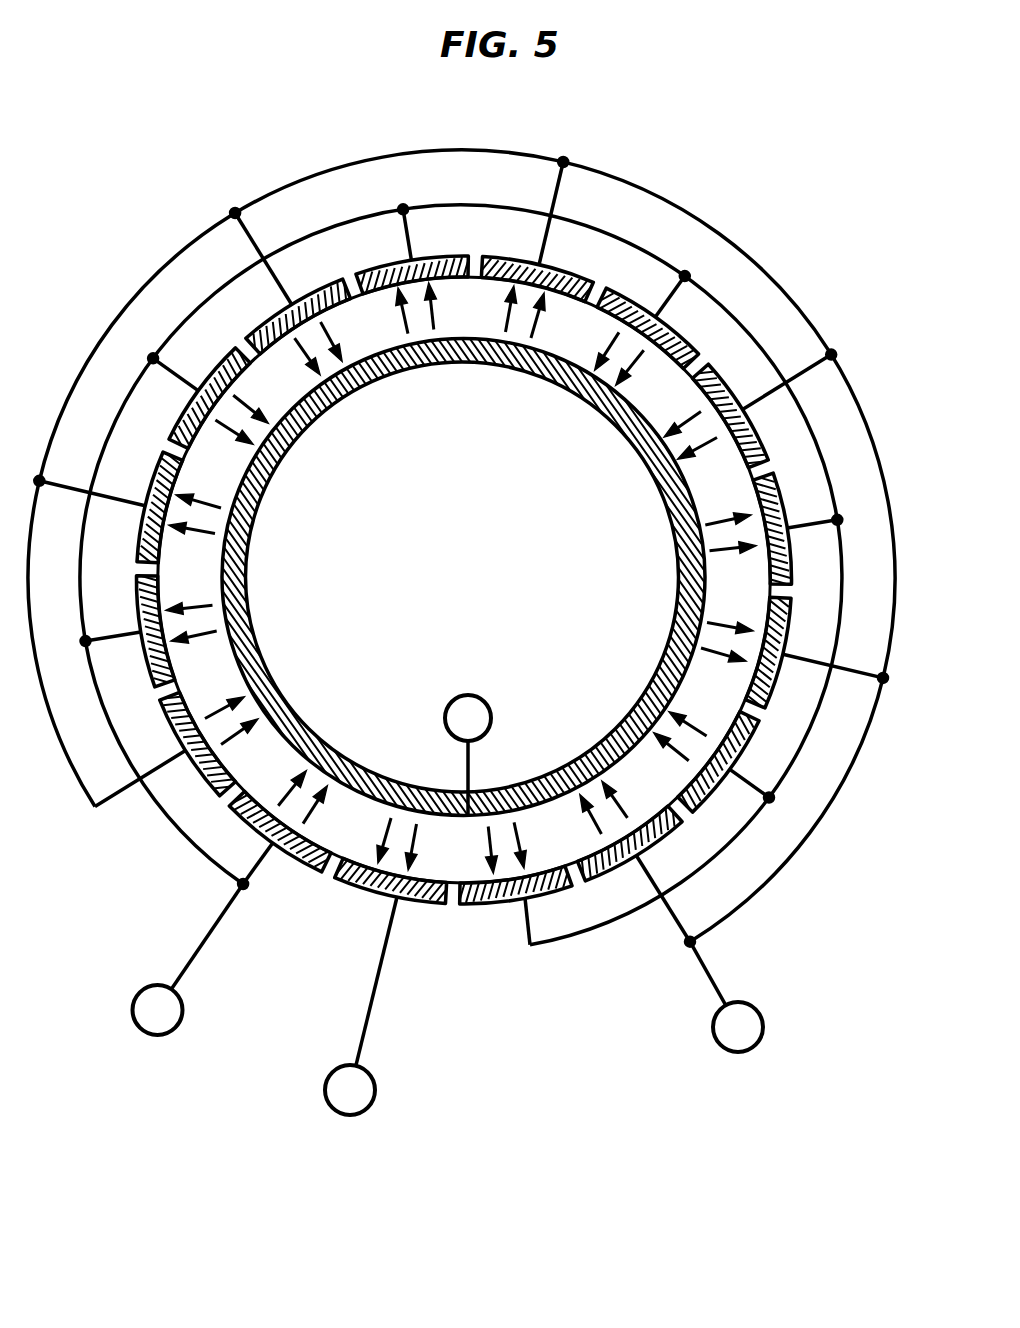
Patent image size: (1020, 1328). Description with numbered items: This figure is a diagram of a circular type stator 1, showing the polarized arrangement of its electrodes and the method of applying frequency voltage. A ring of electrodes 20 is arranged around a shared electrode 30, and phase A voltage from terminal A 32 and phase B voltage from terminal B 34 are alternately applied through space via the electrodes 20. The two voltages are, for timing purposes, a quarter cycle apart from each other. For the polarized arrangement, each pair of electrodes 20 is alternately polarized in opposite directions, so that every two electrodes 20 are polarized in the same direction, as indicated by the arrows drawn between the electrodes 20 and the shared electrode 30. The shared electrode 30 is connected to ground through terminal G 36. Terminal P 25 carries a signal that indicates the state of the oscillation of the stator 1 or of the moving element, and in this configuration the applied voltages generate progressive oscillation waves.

The electrodes 20 is at (683, 330).
The electrode 30 is at (672, 500).
The stator 1 is at (712, 690).
The terminal G 36 is at (470, 695).
The terminal A 32 is at (143, 1036).
The terminal B 34 is at (728, 1051).
The terminal P 25 is at (342, 1114).